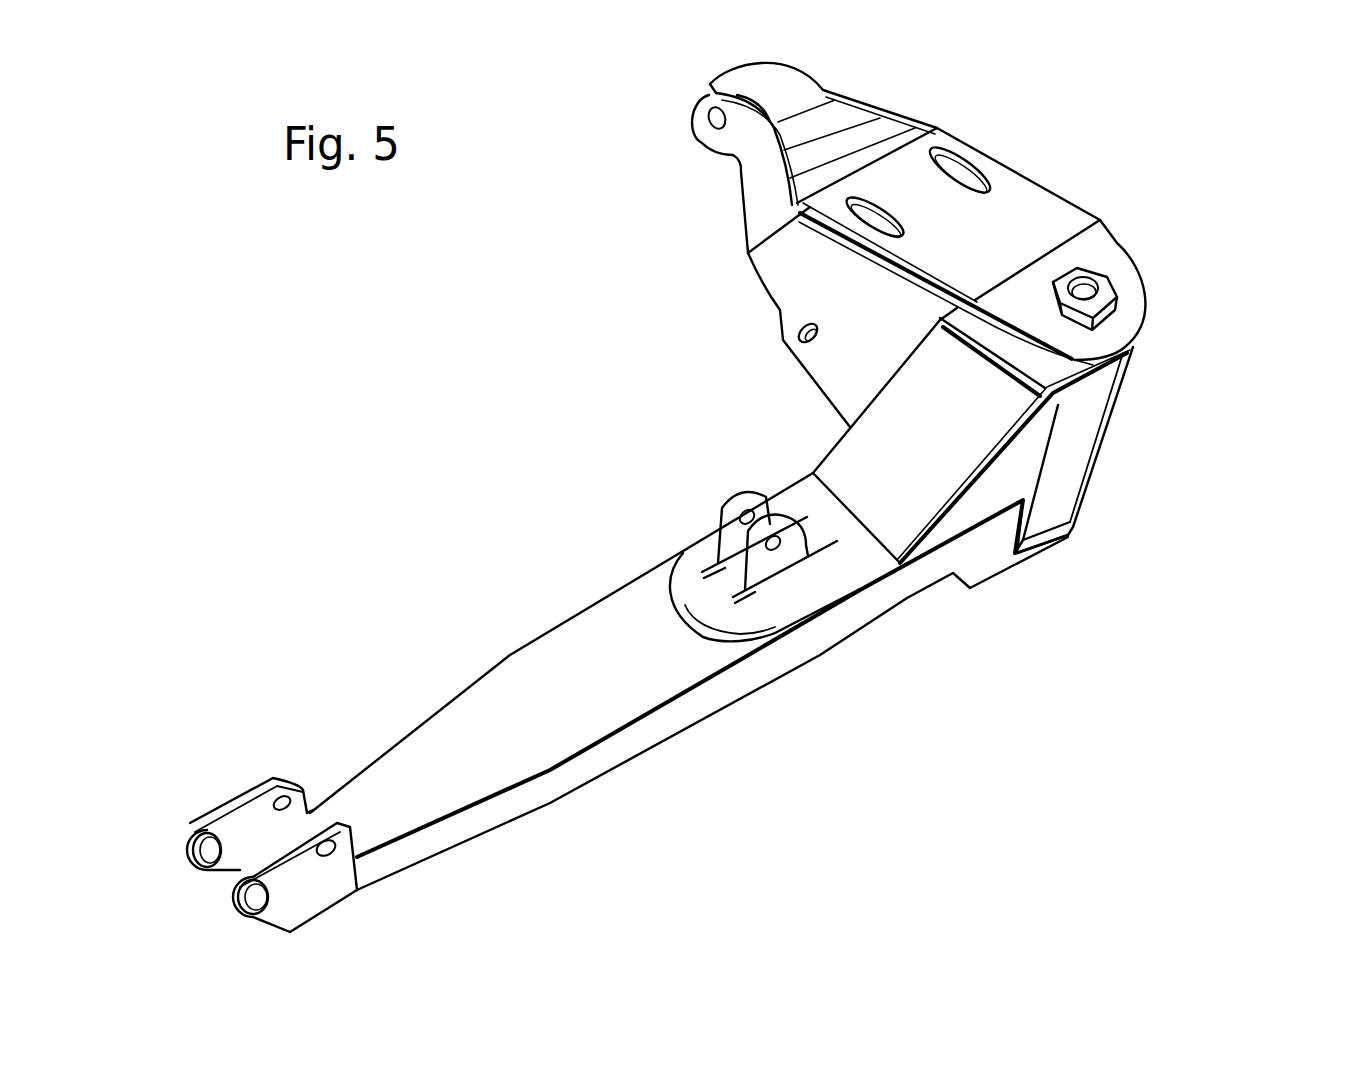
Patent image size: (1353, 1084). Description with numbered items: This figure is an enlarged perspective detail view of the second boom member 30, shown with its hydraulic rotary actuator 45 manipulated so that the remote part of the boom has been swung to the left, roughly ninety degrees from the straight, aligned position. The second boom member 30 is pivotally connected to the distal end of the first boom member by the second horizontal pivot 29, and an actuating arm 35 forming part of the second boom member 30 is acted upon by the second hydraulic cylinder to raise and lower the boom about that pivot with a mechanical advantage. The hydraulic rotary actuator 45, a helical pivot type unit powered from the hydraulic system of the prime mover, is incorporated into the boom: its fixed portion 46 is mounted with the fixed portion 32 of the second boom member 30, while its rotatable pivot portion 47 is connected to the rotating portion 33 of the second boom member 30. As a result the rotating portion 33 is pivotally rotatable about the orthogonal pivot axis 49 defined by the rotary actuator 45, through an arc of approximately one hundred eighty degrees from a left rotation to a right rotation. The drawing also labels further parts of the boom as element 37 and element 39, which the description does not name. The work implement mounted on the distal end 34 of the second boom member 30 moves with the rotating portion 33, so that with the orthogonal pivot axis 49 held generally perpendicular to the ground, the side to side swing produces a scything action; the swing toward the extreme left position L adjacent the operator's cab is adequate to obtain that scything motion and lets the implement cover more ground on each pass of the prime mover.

The second horizontal pivot 29 is at (796, 340).
The second boom member 30 is at (632, 383).
The fixed portion of the second boom member 32 is at (1027, 170).
The rotating portion of the second boom member 33 is at (660, 748).
The distal end of the second boom member 34 is at (375, 752).
The actuating arm 35 is at (712, 153).
The bracket tabs 37 is at (745, 492).
The lugs 39 is at (183, 835).
The hydraulic rotary actuator 45 is at (1172, 447).
The fixed portion of the hydraulic rotary actuator 46 is at (1120, 396).
The rotatable pivot portion 47 is at (1080, 522).
The orthogonal pivot axis 49 is at (1093, 265).
The extreme left position L is at (540, 545).